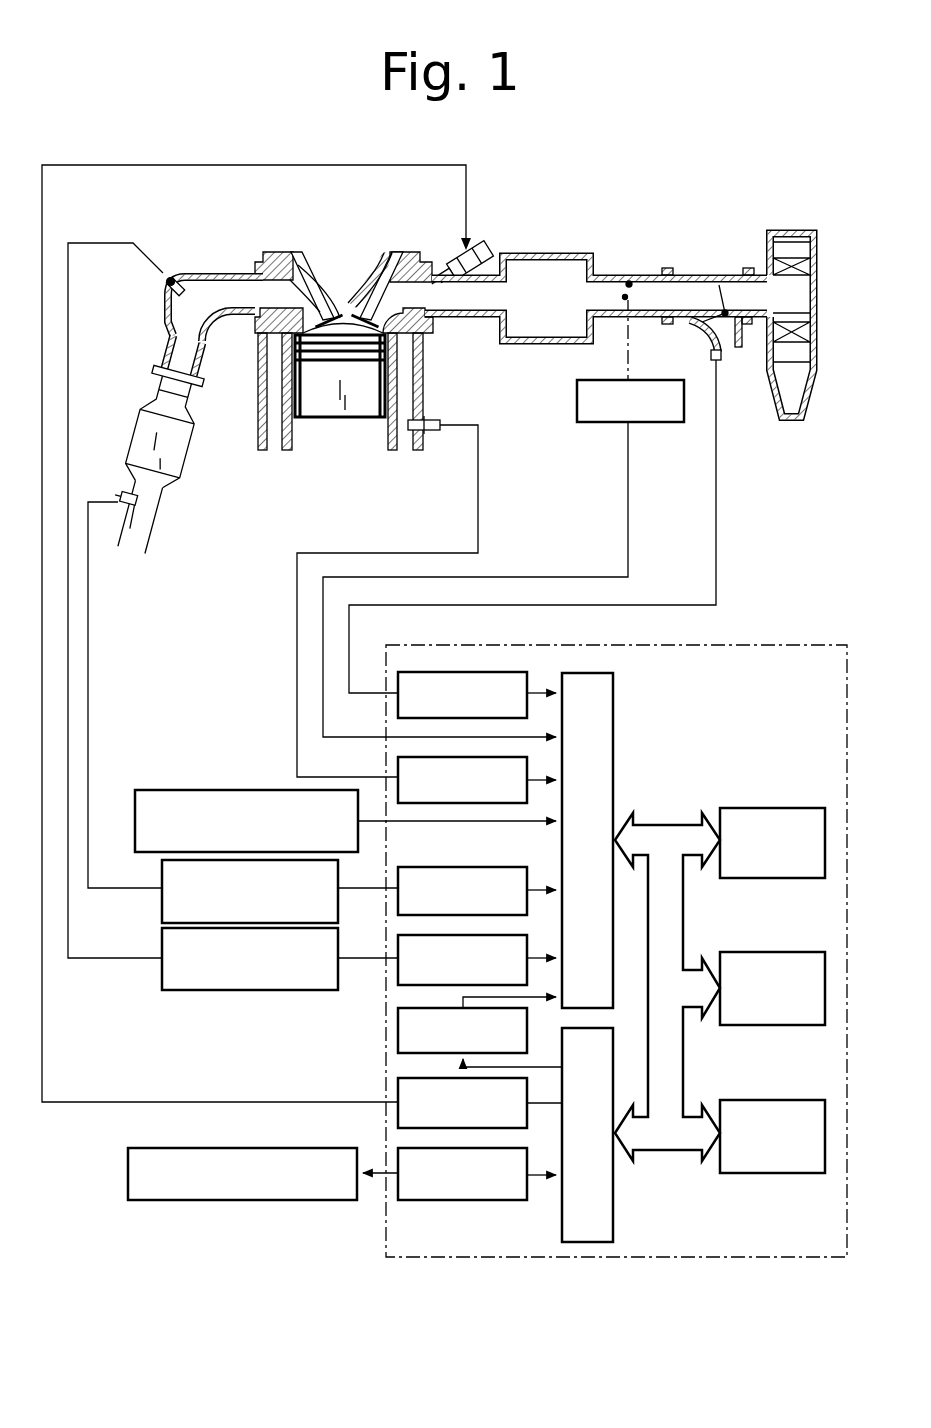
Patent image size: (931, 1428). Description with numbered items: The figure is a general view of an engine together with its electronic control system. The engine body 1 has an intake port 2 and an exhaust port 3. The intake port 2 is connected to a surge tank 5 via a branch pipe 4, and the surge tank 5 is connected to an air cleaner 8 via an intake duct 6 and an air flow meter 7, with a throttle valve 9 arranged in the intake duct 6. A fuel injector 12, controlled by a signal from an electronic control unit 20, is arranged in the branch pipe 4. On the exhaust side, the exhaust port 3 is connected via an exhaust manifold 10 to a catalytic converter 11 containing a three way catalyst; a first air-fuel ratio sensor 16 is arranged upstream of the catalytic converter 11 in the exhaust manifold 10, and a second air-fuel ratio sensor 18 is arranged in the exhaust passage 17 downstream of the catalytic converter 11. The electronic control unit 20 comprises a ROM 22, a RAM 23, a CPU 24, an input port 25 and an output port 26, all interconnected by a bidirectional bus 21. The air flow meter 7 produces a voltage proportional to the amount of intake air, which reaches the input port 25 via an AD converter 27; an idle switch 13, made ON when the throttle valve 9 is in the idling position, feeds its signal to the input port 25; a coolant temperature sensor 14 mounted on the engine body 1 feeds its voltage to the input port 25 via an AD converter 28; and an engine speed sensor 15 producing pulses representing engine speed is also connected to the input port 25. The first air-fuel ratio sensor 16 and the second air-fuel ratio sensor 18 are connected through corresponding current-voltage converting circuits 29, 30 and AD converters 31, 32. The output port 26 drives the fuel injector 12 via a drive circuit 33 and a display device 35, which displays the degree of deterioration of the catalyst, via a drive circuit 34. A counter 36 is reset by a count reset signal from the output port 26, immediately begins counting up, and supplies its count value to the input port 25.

The engine body 1 is at (436, 381).
The intake port 2 is at (405, 283).
The exhaust port 3 is at (275, 283).
The branch pipe 4 is at (470, 318).
The surge tank 5 is at (560, 256).
The intake duct 6 is at (610, 275).
The air flow meter 7 is at (722, 285).
The air cleaner 8 is at (800, 232).
The throttle valve 9 is at (634, 283).
The exhaust manifold 10 is at (200, 273).
The catalytic converter 11 is at (136, 420).
The fuel injector 12 is at (482, 238).
The idle switch 13 is at (590, 422).
The coolant temperature sensor 14 is at (432, 432).
The engine speed sensor 15 is at (208, 790).
The first air-fuel ratio sensor 16 is at (162, 283).
The exhaust passage 17 is at (160, 515).
The second air-fuel ratio sensor 18 is at (118, 500).
The electronic control unit 20 is at (826, 640).
The bidirectional bus 21 is at (680, 822).
The ROM 22 is at (790, 808).
The RAM 23 is at (790, 952).
The CPU 24 is at (790, 1100).
The input port 25 is at (615, 680).
The output port 26 is at (615, 1215).
The AD converter 27 is at (398, 682).
The AD converter 28 is at (398, 770).
The current-voltage converting circuit 29 is at (162, 982).
The current-voltage converting circuit 30 is at (162, 906).
The AD converter 31 is at (398, 980).
The AD converter 32 is at (398, 905).
The drive circuit 33 is at (398, 1105).
The drive circuit 34 is at (398, 1195).
The display device 35 is at (128, 1173).
The counter 36 is at (398, 1035).